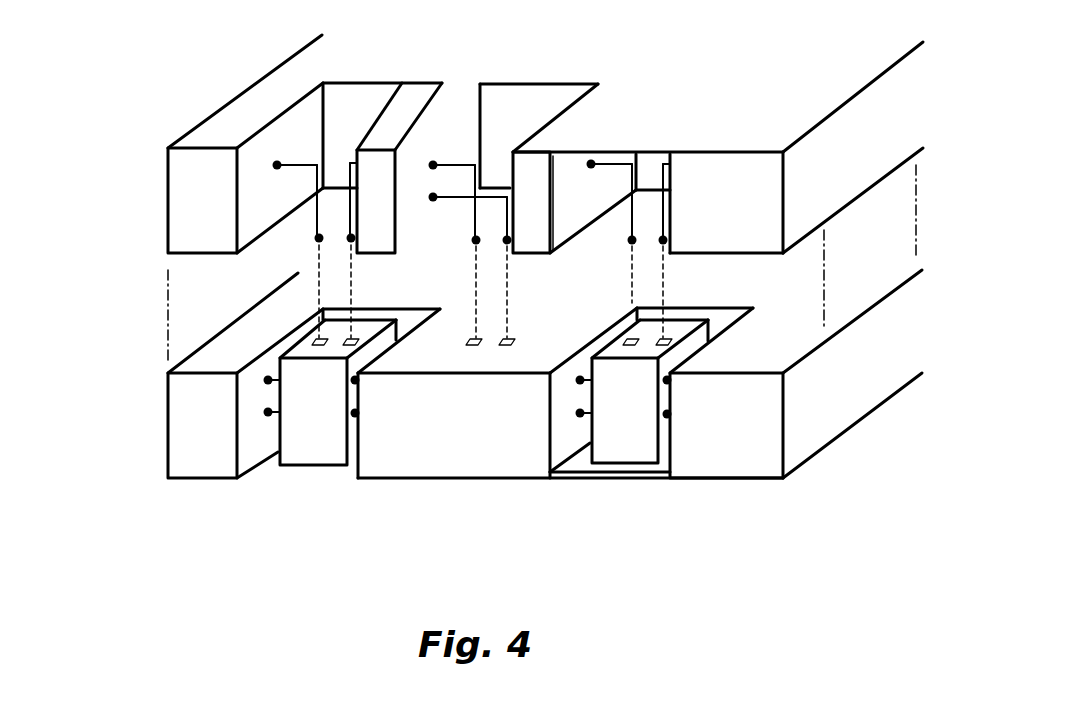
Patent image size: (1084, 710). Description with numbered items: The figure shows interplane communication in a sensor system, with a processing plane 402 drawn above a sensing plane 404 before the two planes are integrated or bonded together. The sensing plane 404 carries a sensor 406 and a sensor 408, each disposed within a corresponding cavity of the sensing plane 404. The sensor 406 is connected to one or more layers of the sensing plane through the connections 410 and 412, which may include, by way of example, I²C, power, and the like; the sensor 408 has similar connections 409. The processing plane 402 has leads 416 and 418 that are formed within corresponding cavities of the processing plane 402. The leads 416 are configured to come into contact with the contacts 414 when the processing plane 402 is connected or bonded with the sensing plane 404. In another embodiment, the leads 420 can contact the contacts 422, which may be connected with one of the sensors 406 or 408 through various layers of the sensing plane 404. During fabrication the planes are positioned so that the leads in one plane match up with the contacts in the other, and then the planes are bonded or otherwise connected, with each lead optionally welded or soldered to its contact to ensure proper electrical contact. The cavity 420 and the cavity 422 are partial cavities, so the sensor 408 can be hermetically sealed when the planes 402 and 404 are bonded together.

The processing plane 402 is at (168, 194).
The sensing plane 404 is at (168, 419).
The sensor 406 is at (307, 465).
The sensor 408 is at (703, 458).
The connections 409 is at (580, 381).
The connections 410 is at (263, 412).
The connections 412 is at (357, 384).
The contacts 414 is at (325, 337).
The leads 416 is at (302, 165).
The leads 418 is at (688, 160).
The leads 420 is at (508, 178).
The contacts 422 is at (503, 333).